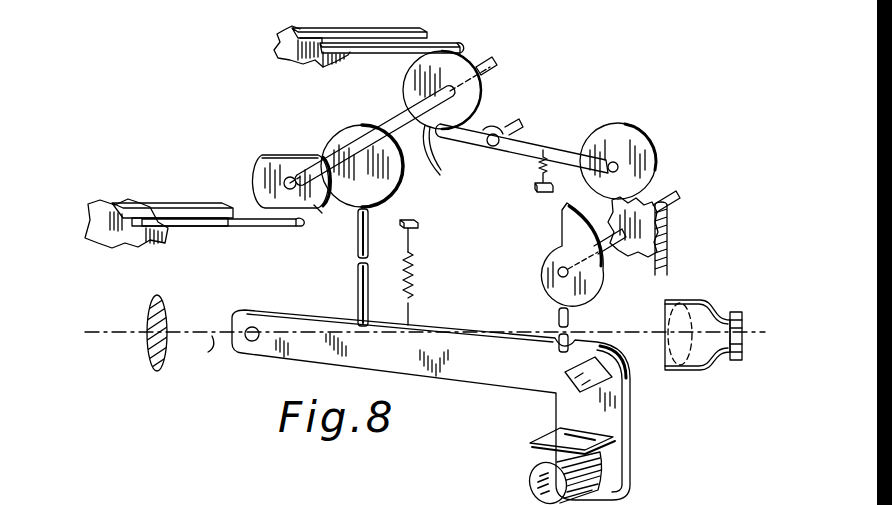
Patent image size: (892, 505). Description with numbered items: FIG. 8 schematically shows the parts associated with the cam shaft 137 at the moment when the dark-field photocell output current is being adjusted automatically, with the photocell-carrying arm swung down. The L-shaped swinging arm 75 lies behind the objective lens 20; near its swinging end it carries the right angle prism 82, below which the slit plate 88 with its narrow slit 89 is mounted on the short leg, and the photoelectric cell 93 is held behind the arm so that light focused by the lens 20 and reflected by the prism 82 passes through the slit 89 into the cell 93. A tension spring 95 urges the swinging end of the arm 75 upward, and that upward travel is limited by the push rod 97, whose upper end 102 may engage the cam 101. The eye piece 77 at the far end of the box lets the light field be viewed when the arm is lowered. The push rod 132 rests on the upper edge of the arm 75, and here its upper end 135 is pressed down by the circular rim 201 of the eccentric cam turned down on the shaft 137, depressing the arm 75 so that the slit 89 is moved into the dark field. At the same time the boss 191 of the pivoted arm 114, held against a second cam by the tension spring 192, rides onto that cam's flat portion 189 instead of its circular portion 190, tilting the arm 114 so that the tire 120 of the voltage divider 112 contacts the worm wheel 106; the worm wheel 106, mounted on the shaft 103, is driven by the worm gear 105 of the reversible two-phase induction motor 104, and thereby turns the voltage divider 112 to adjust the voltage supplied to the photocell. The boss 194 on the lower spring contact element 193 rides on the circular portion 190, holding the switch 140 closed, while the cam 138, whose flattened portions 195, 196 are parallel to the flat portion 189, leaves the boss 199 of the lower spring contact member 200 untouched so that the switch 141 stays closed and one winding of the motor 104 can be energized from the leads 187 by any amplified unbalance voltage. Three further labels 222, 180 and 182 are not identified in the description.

The objective lens 20 is at (152, 355).
The optical axis 222 is at (195, 353).
The L-shaped swinging arm 75 is at (477, 385).
The upper end of push rod 102 is at (559, 311).
The push rod 97 is at (557, 322).
The tension spring 95 is at (412, 290).
The upper end of push rod 135 is at (400, 228).
The push rod 132 is at (357, 275).
The circular rim 201 is at (402, 183).
The cam 138 is at (262, 172).
The flattened portion 195 is at (285, 152).
The flattened portion 196 is at (329, 216).
The cam shaft 137 is at (492, 75).
The circular portion 190 is at (415, 75).
The switch 140 is at (282, 57).
The slide bar 180 is at (365, 30).
The slide guide 182 is at (322, 27).
The lower spring contact element 193 is at (433, 42).
The boss 194 is at (461, 50).
The leads 187 is at (142, 194).
The reversible two-phase induction motor 104 is at (178, 200).
The switch 141 is at (180, 228).
The lower spring contact member 200 is at (256, 226).
The boss 199 is at (300, 228).
The pivoted arm 114 is at (537, 152).
The boss 191 is at (441, 150).
The flat portion 189 is at (447, 154).
The tension spring 192 is at (534, 181).
The voltage divider 112 is at (648, 150).
The tire 120 is at (656, 178).
The worm wheel 106 is at (633, 252).
The worm gear 105 is at (669, 245).
The shaft 103 is at (681, 203).
The cam 101 is at (568, 230).
The right angle prism 82 is at (565, 385).
The narrow slit 89 is at (613, 436).
The slit plate 88 is at (608, 443).
The photoelectric cell 93 is at (530, 481).
The eye piece 77 is at (699, 370).